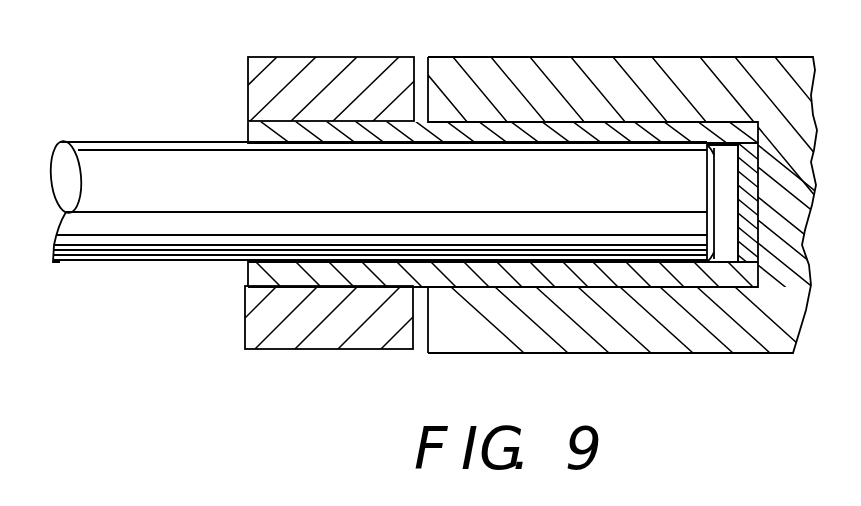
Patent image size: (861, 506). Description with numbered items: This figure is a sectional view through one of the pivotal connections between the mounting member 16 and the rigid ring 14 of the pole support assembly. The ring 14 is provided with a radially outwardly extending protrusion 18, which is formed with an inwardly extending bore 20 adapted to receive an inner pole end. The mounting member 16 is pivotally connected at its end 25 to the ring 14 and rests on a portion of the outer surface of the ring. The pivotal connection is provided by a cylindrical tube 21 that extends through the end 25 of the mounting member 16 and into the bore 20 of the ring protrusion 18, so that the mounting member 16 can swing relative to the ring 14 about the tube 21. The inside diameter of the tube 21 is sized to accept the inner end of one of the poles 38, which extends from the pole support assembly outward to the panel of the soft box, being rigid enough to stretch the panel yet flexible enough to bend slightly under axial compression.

The rigid ring 14 is at (755, 353).
The mounting member 16 is at (245, 318).
The protrusion 18 is at (498, 57).
The bore 20 is at (483, 283).
The cylindrical tube 21 is at (538, 128).
The end of mounting member 25 is at (347, 57).
The pole 38 is at (178, 165).